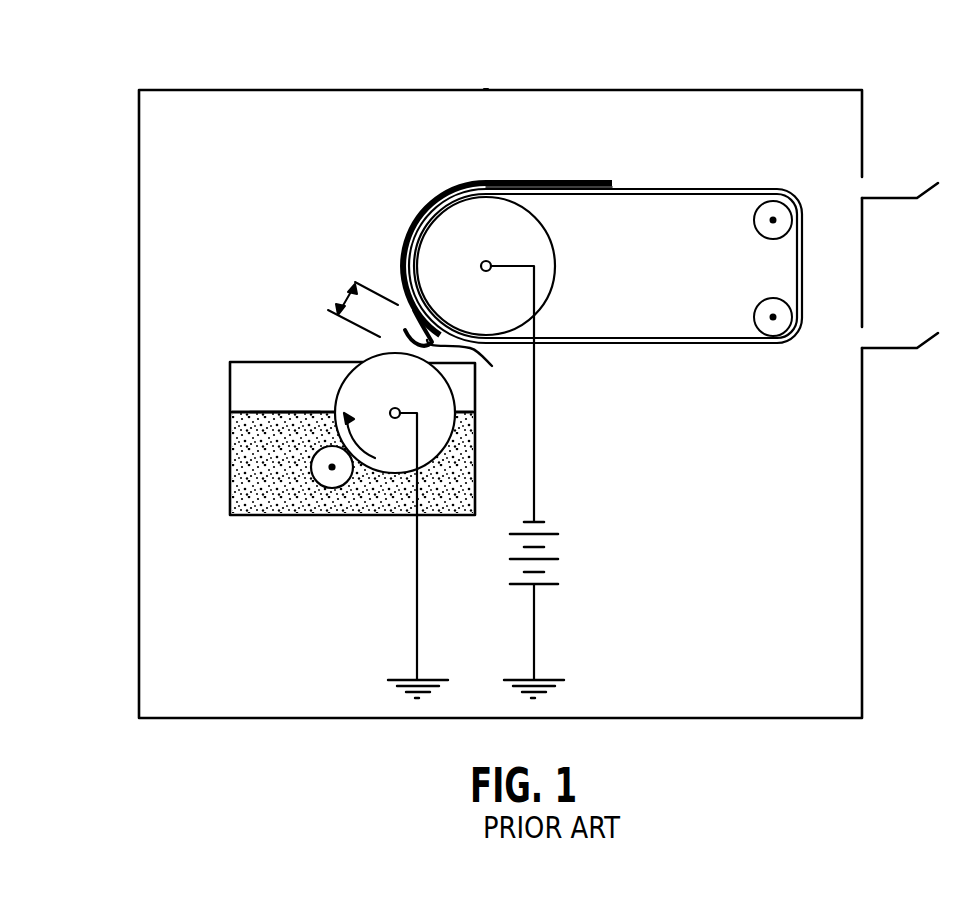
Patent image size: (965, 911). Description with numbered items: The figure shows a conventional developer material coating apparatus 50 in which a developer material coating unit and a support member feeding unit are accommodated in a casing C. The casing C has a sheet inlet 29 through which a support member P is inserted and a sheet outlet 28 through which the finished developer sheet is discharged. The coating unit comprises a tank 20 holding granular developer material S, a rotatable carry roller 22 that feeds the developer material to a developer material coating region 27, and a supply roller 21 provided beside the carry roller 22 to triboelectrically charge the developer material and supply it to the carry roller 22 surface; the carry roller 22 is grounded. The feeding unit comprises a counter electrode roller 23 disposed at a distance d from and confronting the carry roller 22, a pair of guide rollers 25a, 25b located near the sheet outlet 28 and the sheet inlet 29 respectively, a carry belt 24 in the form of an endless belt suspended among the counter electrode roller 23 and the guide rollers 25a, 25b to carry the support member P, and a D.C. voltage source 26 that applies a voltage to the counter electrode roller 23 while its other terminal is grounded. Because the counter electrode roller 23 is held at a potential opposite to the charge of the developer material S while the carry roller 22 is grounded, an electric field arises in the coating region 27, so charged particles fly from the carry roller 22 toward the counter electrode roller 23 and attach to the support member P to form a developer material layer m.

The developer material coating apparatus 50 is at (207, 87).
The sheet outlet 28 is at (887, 196).
The sheet inlet 29 is at (888, 346).
The casing C is at (484, 89).
The carry belt 24 is at (734, 193).
The developer material layer m is at (540, 181).
The support member p is at (614, 187).
The counter electrode roller 23 is at (537, 240).
The guide roller 25a is at (760, 230).
The guide roller 25b is at (755, 313).
The developer material coating region 27 is at (477, 363).
The tank 20 is at (225, 478).
The developer material S is at (292, 410).
The carry roller 22 is at (428, 410).
The supply roller 21 is at (335, 479).
The D.C. voltage source 26 is at (548, 547).
The distance d is at (351, 300).